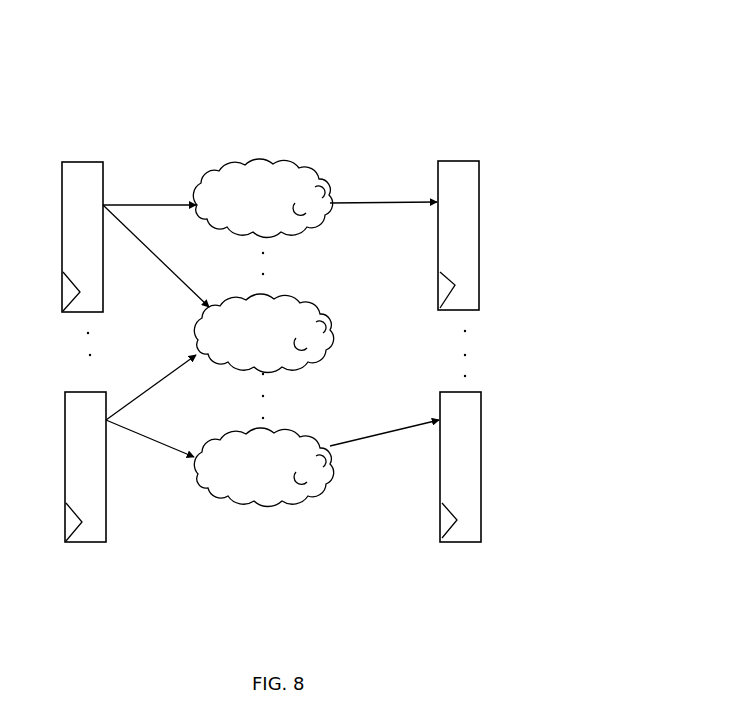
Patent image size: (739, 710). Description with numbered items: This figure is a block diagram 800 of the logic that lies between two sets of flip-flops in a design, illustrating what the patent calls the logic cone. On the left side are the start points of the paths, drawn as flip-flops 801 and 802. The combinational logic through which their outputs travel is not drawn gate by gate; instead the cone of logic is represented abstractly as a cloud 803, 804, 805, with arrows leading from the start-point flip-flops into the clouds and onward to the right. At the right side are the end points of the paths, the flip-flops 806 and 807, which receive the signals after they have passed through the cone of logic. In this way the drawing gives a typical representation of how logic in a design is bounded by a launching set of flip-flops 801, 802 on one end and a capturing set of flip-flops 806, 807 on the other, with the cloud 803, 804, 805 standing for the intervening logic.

The network system 800 is at (494, 86).
The flip-flop 801 is at (104, 161).
The flip-flop 802 is at (79, 390).
The cloud 803 is at (306, 160).
The cloud 804 is at (306, 306).
The cloud 805 is at (306, 430).
The flip-flop 806 is at (481, 239).
The flip-flop 807 is at (483, 481).